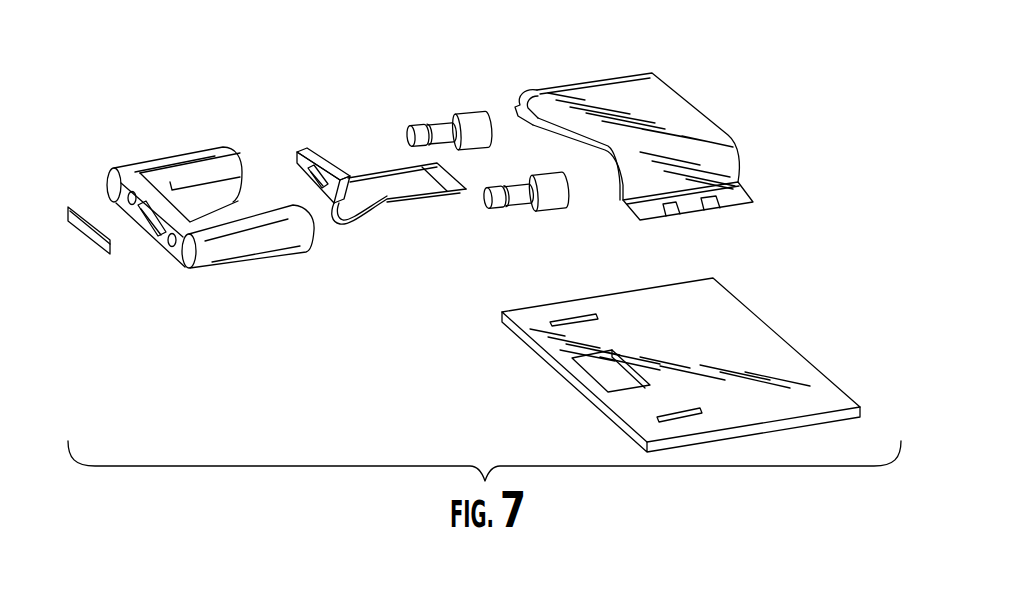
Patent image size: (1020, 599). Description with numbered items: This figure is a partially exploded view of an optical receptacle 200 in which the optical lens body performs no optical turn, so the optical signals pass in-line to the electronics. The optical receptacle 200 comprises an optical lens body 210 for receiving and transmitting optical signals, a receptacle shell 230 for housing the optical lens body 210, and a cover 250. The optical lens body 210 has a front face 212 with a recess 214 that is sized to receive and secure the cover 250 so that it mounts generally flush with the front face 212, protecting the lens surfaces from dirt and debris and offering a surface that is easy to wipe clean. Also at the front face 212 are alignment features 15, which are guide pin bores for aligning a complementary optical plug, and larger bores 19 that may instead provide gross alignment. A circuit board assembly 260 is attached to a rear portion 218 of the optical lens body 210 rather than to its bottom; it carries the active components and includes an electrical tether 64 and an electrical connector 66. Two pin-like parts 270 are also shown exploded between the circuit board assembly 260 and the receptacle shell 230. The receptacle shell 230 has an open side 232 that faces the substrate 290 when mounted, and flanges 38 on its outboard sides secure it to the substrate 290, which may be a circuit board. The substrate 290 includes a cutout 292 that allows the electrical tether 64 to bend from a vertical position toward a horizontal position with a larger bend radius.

The optical receptacle 200 is at (764, 92).
The optical lens body 210 is at (304, 277).
The front face 212 is at (110, 207).
The recess 214 is at (150, 231).
The alignment features 15 is at (168, 256).
The bores 19 is at (191, 270).
The rear portion 218 is at (233, 203).
The cover 250 is at (90, 233).
The circuit board assembly 260 is at (296, 127).
The electrical tether 64 is at (390, 200).
The electrical connector 66 is at (453, 193).
The pins 270 is at (542, 164).
The receptacle shell 230 is at (596, 70).
The open side 232 is at (607, 163).
The flanges 38 is at (733, 197).
The substrate 290 is at (548, 389).
The cutout 292 is at (603, 377).